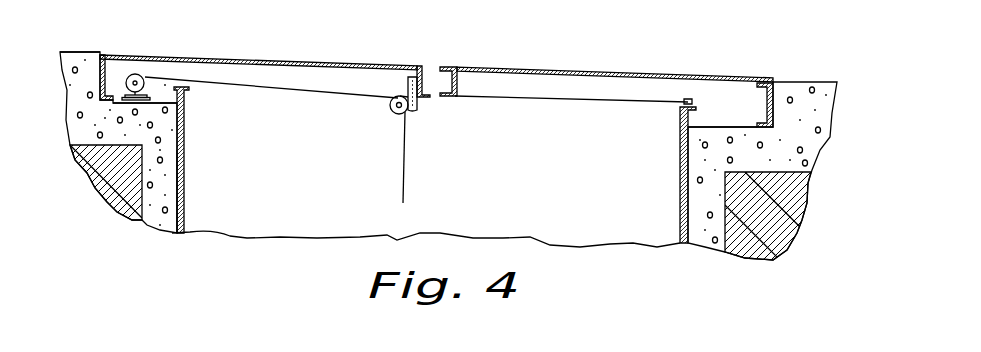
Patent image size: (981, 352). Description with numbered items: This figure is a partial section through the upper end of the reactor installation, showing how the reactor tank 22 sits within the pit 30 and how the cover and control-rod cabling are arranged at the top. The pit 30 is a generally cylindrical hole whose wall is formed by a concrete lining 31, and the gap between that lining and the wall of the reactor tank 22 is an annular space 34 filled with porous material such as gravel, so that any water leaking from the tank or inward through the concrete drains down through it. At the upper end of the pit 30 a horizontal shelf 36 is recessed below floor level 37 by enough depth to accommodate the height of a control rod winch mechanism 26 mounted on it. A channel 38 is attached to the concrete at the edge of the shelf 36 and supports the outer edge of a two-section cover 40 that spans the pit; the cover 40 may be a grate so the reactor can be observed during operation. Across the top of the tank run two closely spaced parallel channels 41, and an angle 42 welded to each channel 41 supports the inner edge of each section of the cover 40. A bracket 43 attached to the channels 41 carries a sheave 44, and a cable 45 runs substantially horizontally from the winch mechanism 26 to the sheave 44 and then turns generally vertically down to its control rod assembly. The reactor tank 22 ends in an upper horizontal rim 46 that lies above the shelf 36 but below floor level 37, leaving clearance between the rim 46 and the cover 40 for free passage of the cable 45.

The reactor tank 22 is at (184, 187).
The control rod winch mechanism 26 is at (141, 77).
The pit 30 is at (738, 259).
The lining 31 is at (158, 218).
The annular space 34 is at (186, 142).
The shelf 36 is at (168, 100).
The floor level 37 is at (80, 52).
The channel 38 is at (105, 70).
The cover 40 is at (248, 58).
The channel 41 is at (450, 67).
The angle 42 is at (396, 65).
The bracket 43 is at (407, 95).
The sheave 44 is at (396, 113).
The cable 45 is at (210, 81).
The rim 46 is at (683, 100).